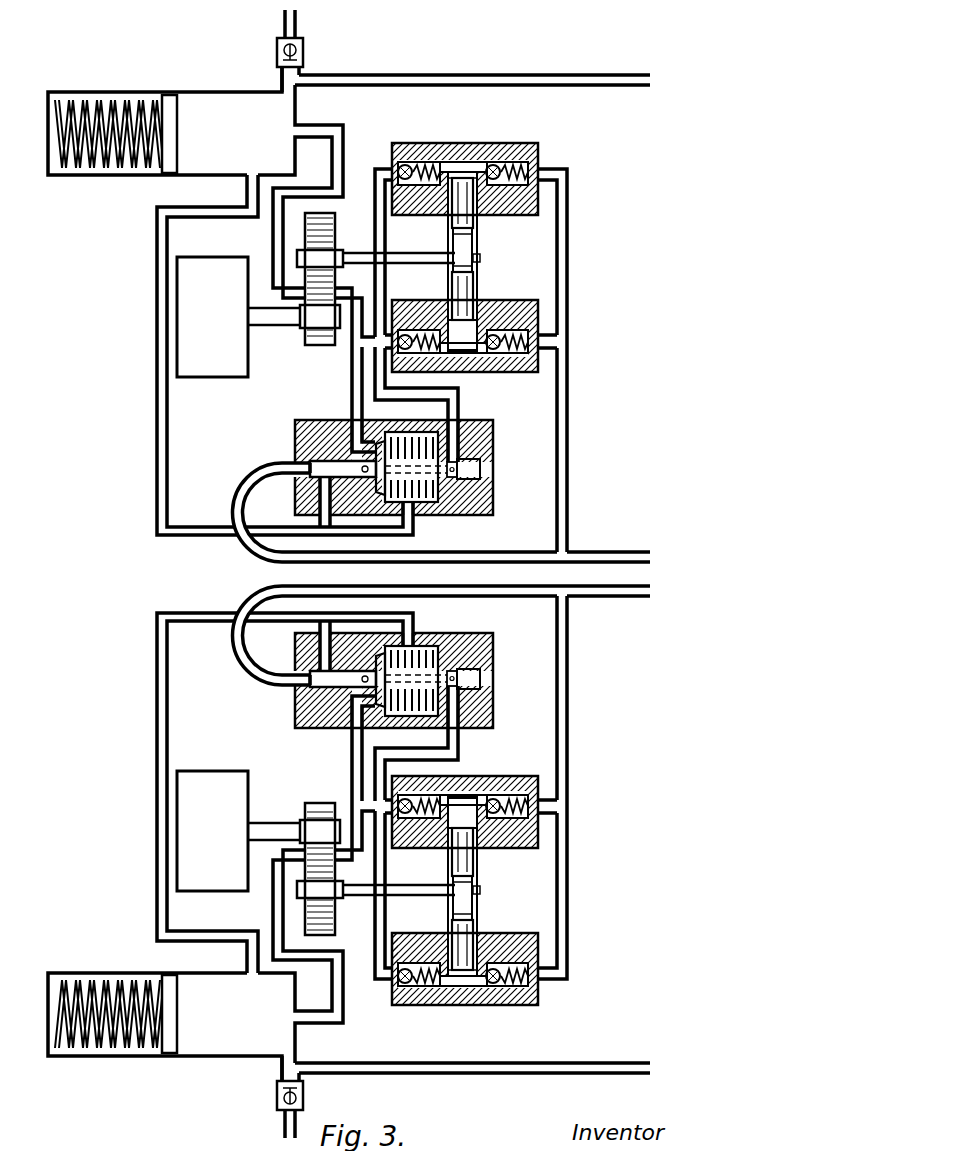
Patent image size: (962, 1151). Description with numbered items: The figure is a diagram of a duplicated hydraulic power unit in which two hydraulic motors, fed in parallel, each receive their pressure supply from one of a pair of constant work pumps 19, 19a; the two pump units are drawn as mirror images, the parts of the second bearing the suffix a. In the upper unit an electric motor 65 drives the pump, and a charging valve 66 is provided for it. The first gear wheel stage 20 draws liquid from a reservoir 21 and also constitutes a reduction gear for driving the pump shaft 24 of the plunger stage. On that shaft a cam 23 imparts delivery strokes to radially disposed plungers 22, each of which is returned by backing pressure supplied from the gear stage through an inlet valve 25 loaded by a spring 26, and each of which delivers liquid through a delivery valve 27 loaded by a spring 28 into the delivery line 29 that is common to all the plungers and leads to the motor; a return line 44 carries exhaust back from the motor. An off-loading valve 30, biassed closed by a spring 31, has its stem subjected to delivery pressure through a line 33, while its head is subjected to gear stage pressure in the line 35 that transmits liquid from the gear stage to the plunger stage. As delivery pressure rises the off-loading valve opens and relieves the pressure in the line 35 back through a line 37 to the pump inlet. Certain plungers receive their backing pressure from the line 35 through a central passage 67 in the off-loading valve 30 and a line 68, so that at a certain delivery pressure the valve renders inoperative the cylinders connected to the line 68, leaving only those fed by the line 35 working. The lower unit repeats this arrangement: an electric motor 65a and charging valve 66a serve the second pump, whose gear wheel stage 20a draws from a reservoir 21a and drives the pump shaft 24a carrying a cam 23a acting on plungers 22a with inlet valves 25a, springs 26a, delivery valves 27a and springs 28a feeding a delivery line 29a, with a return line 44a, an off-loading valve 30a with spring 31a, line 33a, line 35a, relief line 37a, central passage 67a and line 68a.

The constant work pump 19 is at (444, 260).
The first gear wheel stage 20 is at (337, 252).
The reservoir 21 is at (217, 98).
The plunger 22 is at (468, 222).
The cam 23 is at (458, 262).
The pump shaft 24 is at (401, 259).
The inlet valve 25 is at (396, 167).
The spring 26 is at (412, 165).
The delivery valve 27 is at (491, 165).
The spring 28 is at (517, 168).
The delivery line 29 is at (567, 456).
The off-loading valve 30 is at (394, 473).
The spring 31 is at (412, 492).
The line 33 is at (262, 468).
The line 35 is at (352, 394).
The line 37 is at (157, 441).
The return line 44 is at (614, 78).
The electric motor 65 is at (214, 372).
The charging valve 66 is at (306, 50).
The central passage 67 is at (448, 486).
The line 68 is at (389, 393).
The reservoir 21a is at (192, 1058).
The line 37a is at (157, 744).
The charging valve 66a is at (280, 1104).
The return line 44a is at (625, 1078).
The electric motor 65a is at (228, 776).
The first gear wheel stage 20a is at (300, 904).
The pump shaft 24a is at (423, 893).
The line 35a is at (352, 773).
The line 68a is at (460, 752).
The delivery line 29a is at (560, 903).
The line 33a is at (262, 601).
The constant work pump 19a is at (494, 898).
The inlet valve 25a is at (405, 815).
The spring 26a is at (414, 985).
The delivery valve 27a is at (493, 799).
The spring 28a is at (518, 803).
The plunger 22a is at (473, 864).
The cam 23a is at (473, 890).
The off-loading valve 30a is at (399, 680).
The spring 31a is at (418, 658).
The central passage 67a is at (448, 664).